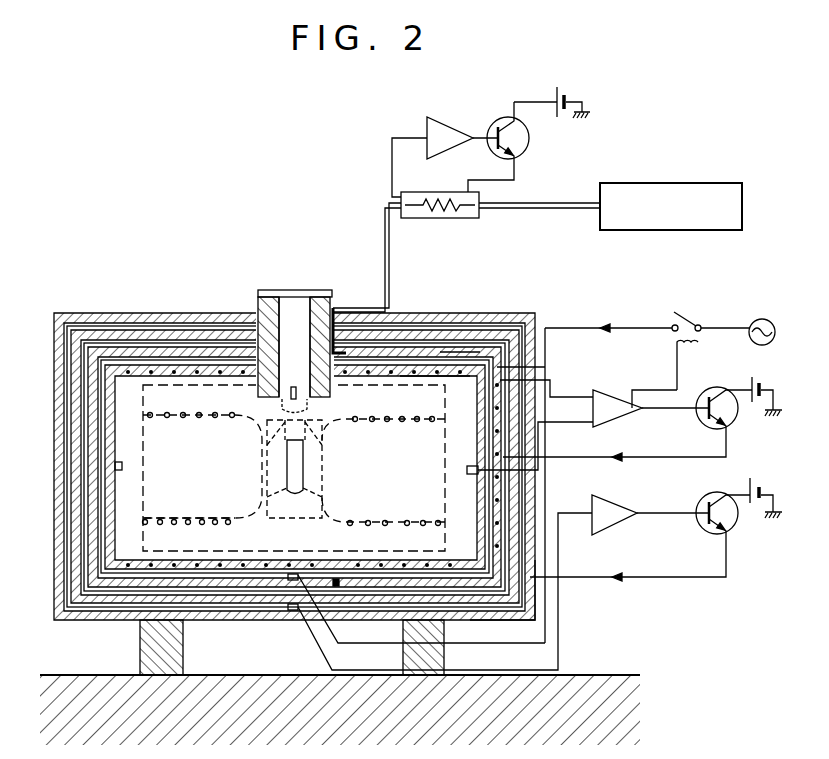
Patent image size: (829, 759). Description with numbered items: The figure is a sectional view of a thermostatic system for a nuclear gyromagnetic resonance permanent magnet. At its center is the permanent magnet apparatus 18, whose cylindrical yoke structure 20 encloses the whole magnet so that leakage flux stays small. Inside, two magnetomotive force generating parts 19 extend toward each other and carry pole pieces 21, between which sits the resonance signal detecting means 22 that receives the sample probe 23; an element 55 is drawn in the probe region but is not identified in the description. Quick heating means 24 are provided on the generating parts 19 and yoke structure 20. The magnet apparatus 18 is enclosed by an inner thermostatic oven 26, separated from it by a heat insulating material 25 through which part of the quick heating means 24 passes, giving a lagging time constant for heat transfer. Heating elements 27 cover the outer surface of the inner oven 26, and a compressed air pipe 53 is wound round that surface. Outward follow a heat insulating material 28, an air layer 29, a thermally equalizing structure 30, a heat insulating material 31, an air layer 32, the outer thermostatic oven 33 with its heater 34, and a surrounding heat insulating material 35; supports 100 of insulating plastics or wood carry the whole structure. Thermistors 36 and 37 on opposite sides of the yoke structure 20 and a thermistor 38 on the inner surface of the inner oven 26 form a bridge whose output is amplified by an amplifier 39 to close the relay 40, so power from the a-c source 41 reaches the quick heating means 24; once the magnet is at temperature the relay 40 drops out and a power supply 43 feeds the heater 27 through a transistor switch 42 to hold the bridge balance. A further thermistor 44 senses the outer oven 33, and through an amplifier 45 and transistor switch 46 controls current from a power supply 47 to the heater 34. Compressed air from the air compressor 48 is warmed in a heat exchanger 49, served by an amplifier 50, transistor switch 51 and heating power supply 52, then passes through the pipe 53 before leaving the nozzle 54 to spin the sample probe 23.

The permanent magnet apparatus 18 is at (240, 545).
The magnetomotive force generating parts 19 is at (294, 468).
The cylindrical yoke structure 20 is at (145, 550).
The pole pieces 21 is at (318, 468).
The resonance signal detecting means 22 is at (290, 492).
The sample probe 23 is at (294, 358).
The quick heating means 24 is at (387, 375).
The heat insulating material 25 is at (423, 370).
The inner thermostatic oven 26 is at (468, 352).
The heating elements 27 is at (505, 382).
The heat insulating material 28 is at (240, 376).
The air layer 29 is at (217, 362).
The thermally equalizing structure 30 is at (186, 352).
The heat insulating material 31 is at (162, 333).
The air layer 32 is at (130, 350).
The outer thermostatic oven 33 is at (101, 340).
The heater 34 is at (532, 613).
The heat insulating material 35 is at (66, 313).
The thermistor 36 is at (119, 470).
The thermistor 37 is at (470, 476).
The thermistor 38 is at (290, 581).
The amplifier 39 is at (612, 390).
The relay 40 is at (690, 318).
The a-c source 41 is at (762, 319).
The transistor switch 42 is at (708, 392).
The power supply 43 is at (757, 378).
The thermistor 44 is at (293, 611).
The amplifier 45 is at (616, 505).
The transistor switch 46 is at (701, 499).
The power supply 47 is at (752, 505).
The air compressor 48 is at (648, 183).
The heat exchanger 49 is at (478, 220).
The amplifier 50 is at (445, 118).
The transistor switch 51 is at (529, 138).
The heating power supply 52 is at (566, 94).
The compressed air pipe 53 is at (345, 352).
The nozzle 54 is at (328, 416).
The channel 55 is at (270, 300).
The supports 100 is at (140, 661).